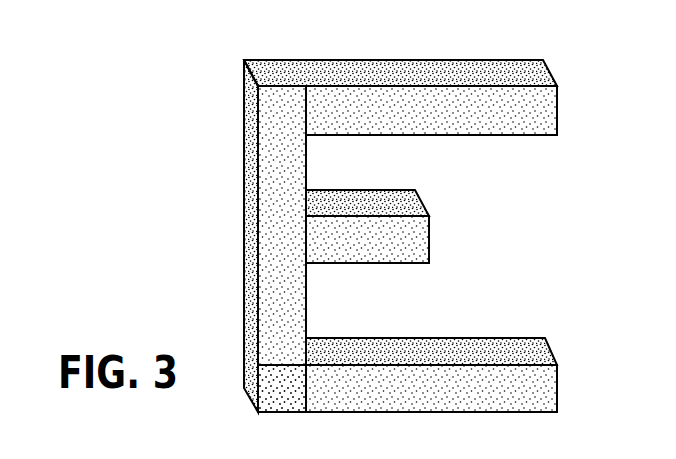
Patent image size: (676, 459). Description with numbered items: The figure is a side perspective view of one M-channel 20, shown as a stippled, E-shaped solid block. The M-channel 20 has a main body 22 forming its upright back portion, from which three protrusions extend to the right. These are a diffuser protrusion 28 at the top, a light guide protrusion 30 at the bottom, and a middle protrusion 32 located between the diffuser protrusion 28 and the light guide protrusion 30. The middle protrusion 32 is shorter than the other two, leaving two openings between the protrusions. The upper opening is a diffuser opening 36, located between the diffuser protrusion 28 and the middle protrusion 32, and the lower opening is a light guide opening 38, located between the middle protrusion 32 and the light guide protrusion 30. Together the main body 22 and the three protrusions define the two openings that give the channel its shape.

The M-channel 20 is at (615, 41).
The main body 22 is at (277, 233).
The diffuser protrusion 28 is at (543, 118).
The light guide protrusion 30 is at (535, 390).
The middle protrusion 32 is at (413, 240).
The diffuser opening 36 is at (375, 175).
The light guide opening 38 is at (375, 318).